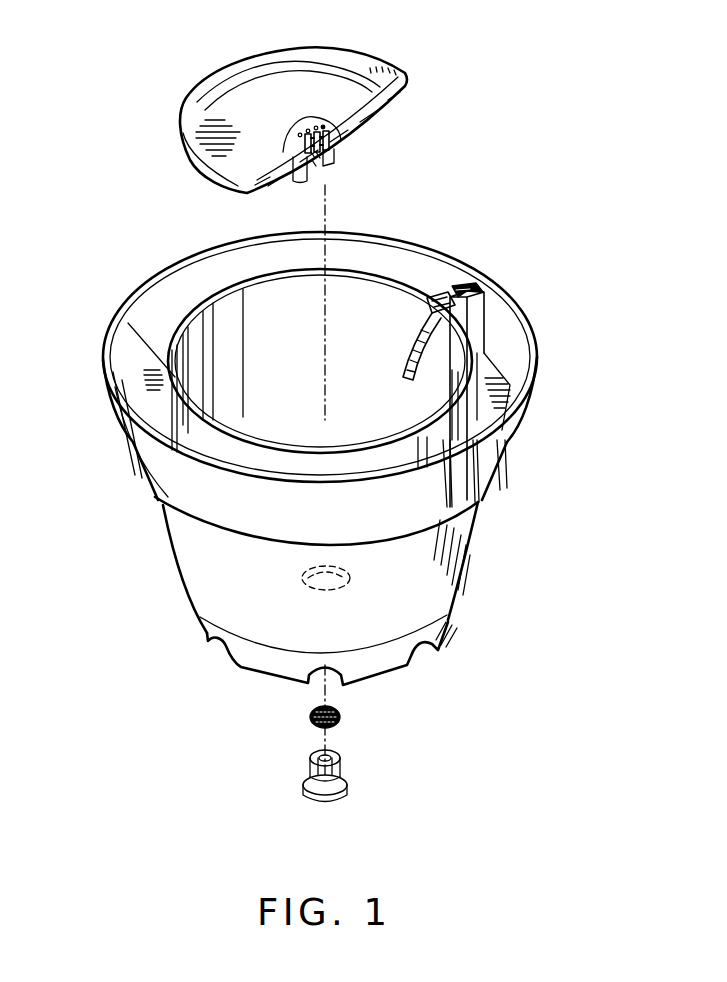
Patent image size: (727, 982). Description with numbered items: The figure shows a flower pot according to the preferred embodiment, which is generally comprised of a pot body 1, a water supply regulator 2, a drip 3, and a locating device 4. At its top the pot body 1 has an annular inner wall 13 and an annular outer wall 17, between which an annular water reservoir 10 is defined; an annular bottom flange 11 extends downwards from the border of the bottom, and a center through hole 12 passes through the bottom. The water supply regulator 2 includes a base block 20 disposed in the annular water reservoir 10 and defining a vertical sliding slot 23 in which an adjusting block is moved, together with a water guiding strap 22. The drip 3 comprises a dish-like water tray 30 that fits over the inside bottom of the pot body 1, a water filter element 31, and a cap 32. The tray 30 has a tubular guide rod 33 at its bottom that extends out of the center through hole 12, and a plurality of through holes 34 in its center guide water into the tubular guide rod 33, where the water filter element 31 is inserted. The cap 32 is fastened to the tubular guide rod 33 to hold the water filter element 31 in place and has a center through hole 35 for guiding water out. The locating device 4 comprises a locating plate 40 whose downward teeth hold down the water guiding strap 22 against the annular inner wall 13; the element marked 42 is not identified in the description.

The pot body 1 is at (195, 577).
The water supply regulator 2 is at (519, 266).
The drip 3 is at (372, 786).
The locating device 4 is at (418, 304).
The annular water reservoir 10 is at (150, 368).
The annular bottom flange 11 is at (265, 668).
The center through hole 12 is at (347, 585).
The annular inner wall 13 is at (200, 307).
The annular outer wall 17 is at (127, 433).
The base block 20 is at (482, 320).
The water guiding strap 22 is at (449, 376).
The vertical sliding slot 23 is at (465, 283).
The dish-like water tray 30 is at (224, 113).
The water filter element 31 is at (343, 718).
The cap 32 is at (330, 803).
The tubular guide rod 33 is at (300, 177).
The through holes 34 is at (338, 146).
The center through hole 35 is at (312, 753).
The locating plate 40 is at (437, 292).
The bracket face 42 is at (486, 388).